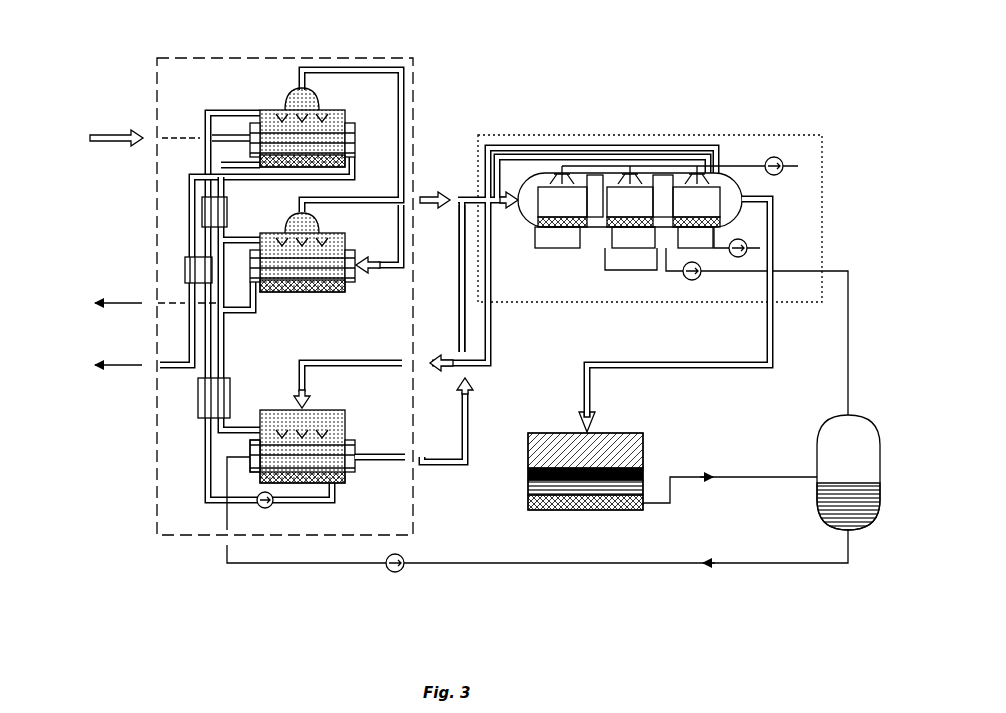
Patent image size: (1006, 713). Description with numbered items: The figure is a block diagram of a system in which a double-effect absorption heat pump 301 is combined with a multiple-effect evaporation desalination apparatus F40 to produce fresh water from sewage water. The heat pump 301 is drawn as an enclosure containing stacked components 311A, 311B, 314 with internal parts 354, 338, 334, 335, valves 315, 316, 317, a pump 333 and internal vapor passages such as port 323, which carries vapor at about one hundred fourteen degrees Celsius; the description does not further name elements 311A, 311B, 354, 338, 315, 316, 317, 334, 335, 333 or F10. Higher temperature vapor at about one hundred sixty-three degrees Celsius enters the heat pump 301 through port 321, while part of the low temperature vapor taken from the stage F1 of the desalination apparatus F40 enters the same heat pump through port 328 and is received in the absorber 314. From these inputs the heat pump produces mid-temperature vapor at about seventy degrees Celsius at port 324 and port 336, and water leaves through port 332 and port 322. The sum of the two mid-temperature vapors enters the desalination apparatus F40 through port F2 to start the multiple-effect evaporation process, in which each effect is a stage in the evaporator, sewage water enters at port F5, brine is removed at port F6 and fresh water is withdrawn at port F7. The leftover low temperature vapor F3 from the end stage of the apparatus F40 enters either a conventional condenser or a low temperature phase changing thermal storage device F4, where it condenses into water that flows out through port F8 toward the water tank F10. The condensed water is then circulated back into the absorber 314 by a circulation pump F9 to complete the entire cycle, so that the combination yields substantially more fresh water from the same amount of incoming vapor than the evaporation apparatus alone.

The double-effect heat pump 301 is at (157, 80).
The first fuel cell stack 311A is at (260, 110).
The second fuel cell stack 311B is at (318, 251).
The stack layer 354 is at (282, 110).
The port 321 is at (118, 132).
The stack bottom layer 338 is at (260, 153).
The first valve 315 is at (202, 217).
The second valve 316 is at (185, 267).
The port 332 is at (130, 303).
The port 322 is at (118, 365).
The third valve 317 is at (198, 393).
The absorber 314 is at (262, 410).
The stack flange 334 is at (260, 472).
The stack bottom layer 335 is at (260, 483).
The pump 333 is at (265, 508).
The port 336 is at (427, 463).
The port 323 is at (402, 62).
The port 324 is at (428, 192).
The port 328 is at (492, 328).
The stage F1 is at (665, 210).
The port F2 is at (488, 198).
The leftover low temperature vapor F3 is at (778, 290).
The low temperature phase changing thermal storage device F4 is at (643, 510).
The port F5 is at (797, 166).
The port F6 is at (745, 245).
The port F7 is at (700, 280).
The port F8 is at (740, 483).
The circulation pump F9 is at (404, 568).
The water tank F10 is at (817, 466).
The multiple-effect evaporation desalination apparatus F40 is at (740, 137).